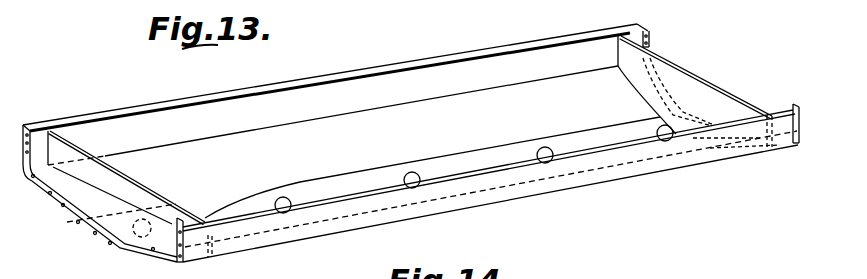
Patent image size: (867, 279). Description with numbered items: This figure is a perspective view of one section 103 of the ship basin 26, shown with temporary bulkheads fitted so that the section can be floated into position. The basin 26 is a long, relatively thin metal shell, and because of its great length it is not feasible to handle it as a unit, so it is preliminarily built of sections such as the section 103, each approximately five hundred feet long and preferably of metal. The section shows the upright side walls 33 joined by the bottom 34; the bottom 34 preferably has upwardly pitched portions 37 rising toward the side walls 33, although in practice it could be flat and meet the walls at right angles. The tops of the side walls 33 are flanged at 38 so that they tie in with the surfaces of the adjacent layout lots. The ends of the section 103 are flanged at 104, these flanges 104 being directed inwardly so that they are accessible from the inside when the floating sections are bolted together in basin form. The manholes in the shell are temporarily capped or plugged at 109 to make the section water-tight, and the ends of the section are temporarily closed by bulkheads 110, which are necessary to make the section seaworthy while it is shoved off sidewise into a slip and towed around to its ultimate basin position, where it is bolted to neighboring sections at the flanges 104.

The basin 26 is at (165, 107).
The side walls 33 is at (38, 143).
The bottom 34 is at (102, 223).
The upwardly pitched portions 37 is at (67, 193).
The flange 38 is at (217, 93).
The section 103 is at (374, 63).
The flanges 104 is at (650, 40).
The caps or plugs 109 is at (283, 197).
The bulkheads 110 is at (77, 145).